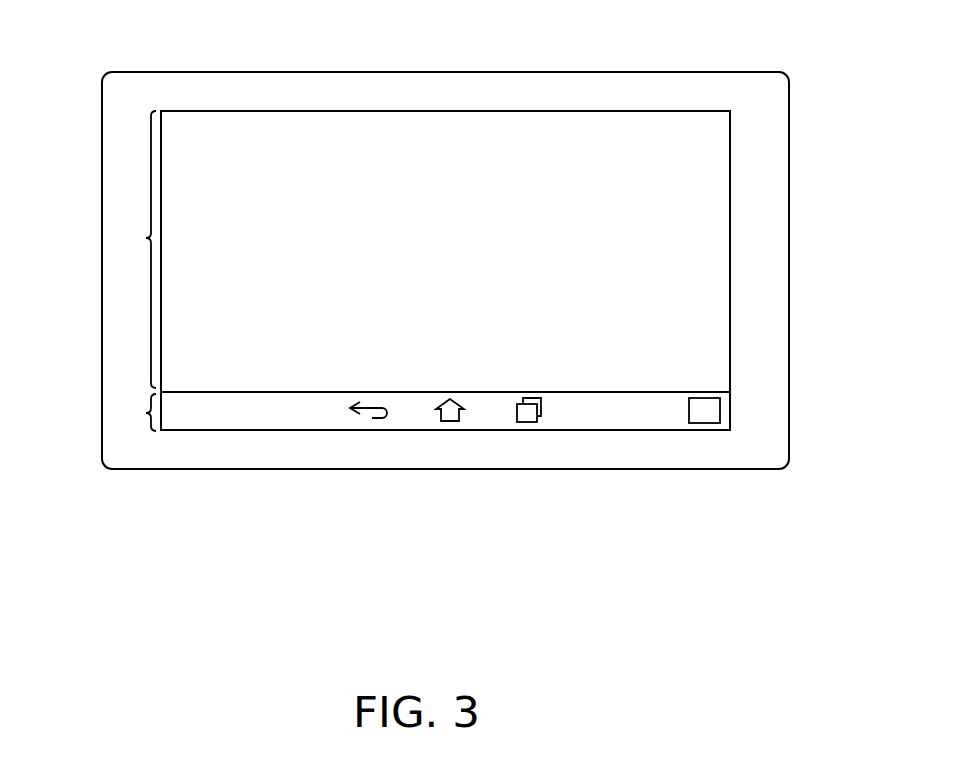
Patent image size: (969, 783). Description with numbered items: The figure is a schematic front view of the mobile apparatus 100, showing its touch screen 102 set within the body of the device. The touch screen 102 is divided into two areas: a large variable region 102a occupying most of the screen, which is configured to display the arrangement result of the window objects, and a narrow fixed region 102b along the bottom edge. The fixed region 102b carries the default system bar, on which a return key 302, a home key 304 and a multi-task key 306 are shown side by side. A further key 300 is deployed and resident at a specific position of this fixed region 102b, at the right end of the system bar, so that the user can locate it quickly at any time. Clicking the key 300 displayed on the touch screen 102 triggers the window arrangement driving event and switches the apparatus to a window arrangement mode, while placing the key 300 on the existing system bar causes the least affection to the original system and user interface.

The mobile apparatus 100 is at (673, 72).
The touch screen 102 is at (730, 250).
The variable region 102a is at (146, 412).
The fixed region 102b is at (146, 238).
The key 300 is at (720, 408).
The return key 302 is at (375, 422).
The home key 304 is at (452, 423).
The multi-task key 306 is at (527, 424).